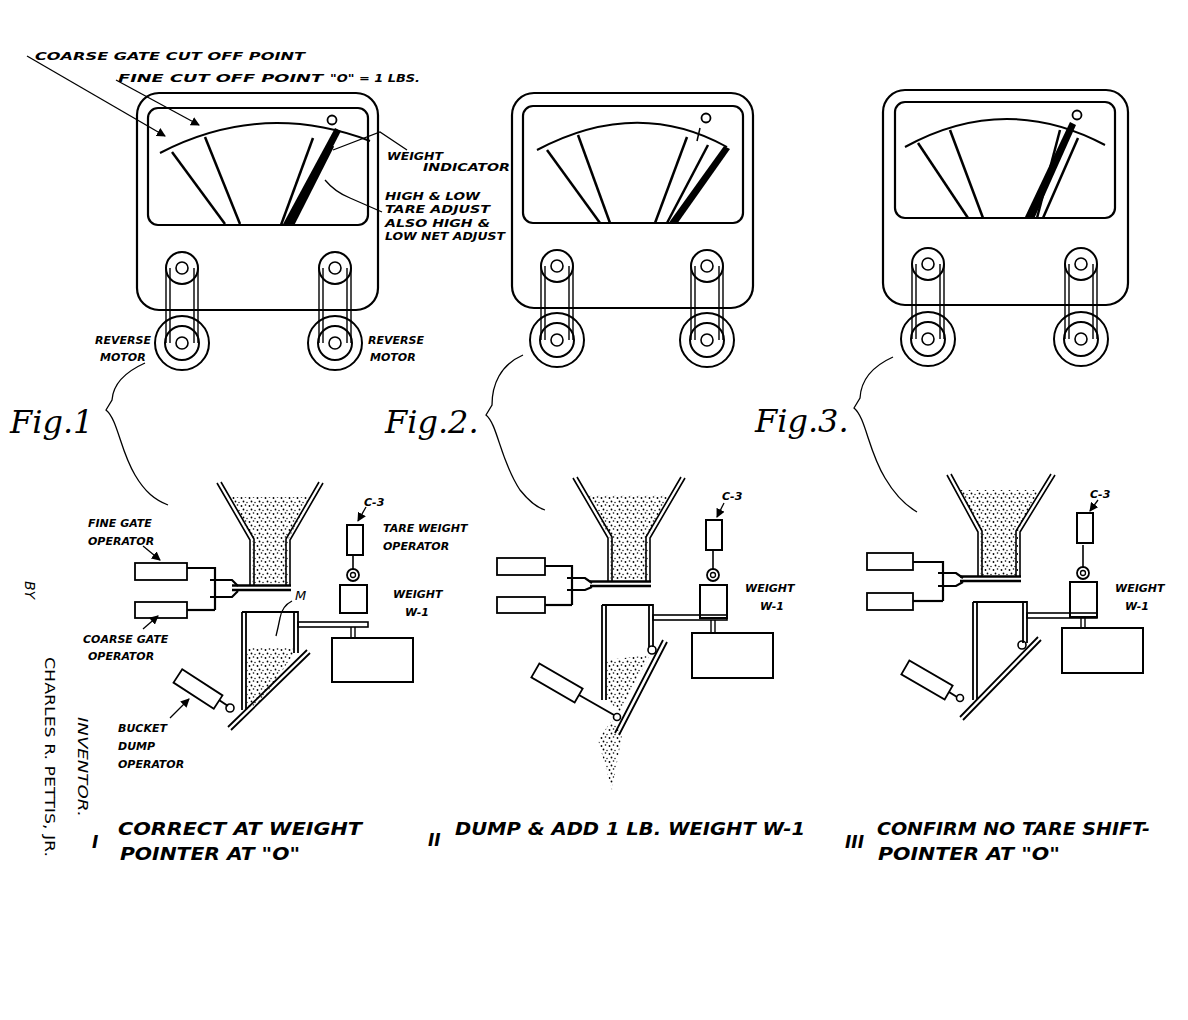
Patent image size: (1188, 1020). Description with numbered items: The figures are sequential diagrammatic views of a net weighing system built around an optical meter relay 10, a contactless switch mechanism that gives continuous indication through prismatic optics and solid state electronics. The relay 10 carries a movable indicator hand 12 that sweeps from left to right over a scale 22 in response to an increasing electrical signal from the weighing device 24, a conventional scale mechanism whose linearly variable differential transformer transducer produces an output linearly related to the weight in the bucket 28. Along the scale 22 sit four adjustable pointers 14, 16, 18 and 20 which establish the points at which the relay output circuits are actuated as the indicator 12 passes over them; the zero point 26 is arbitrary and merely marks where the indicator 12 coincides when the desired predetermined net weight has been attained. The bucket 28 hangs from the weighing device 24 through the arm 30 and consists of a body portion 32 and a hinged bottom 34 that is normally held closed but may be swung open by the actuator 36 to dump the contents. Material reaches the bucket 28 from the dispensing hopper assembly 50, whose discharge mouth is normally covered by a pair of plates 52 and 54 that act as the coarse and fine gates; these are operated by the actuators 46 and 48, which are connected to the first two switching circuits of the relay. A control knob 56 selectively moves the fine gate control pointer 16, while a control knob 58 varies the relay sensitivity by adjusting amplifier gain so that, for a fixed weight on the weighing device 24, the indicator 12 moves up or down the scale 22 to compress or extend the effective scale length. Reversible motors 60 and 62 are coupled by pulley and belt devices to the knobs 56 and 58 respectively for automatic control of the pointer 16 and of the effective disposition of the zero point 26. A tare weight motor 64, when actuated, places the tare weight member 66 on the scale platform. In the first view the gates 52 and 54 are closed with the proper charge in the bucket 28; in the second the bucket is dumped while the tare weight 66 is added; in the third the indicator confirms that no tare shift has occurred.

In FIG. 1, the optical meter relay 10 is at (132, 264).
In FIG. 2, the optical meter relay 10 is at (632, 200).
In FIG. 3, the optical meter relay 10 is at (1005, 197).
In FIG. 1, the indicator hand 12 is at (345, 140).
In FIG. 2, the indicator hand 12 is at (699, 185).
In FIG. 3, the indicator hand 12 is at (1067, 160).
In FIG. 1, the pointer 14 is at (192, 182).
In FIG. 2, the pointer 14 is at (573, 186).
In FIG. 3, the pointer 14 is at (943, 180).
In FIG. 1, the fine gate control pointer 16 is at (223, 181).
In FIG. 2, the fine gate control pointer 16 is at (594, 179).
In FIG. 3, the fine gate control pointer 16 is at (966, 174).
In FIG. 1, the pointer 18 is at (294, 186).
In FIG. 2, the pointer 18 is at (671, 180).
In FIG. 3, the pointer 18 is at (1053, 148).
In FIG. 1, the pointer 20 is at (302, 196).
In FIG. 2, the pointer 20 is at (687, 184).
In FIG. 3, the pointer 20 is at (1063, 175).
In FIG. 1, the scale 22 is at (262, 122).
In FIG. 2, the scale 22 is at (632, 136).
In FIG. 3, the scale 22 is at (1005, 133).
In FIG. 1, the weighing device 24 is at (396, 688).
In FIG. 2, the weighing device 24 is at (732, 655).
In FIG. 3, the weighing device 24 is at (1102, 650).
In FIG. 1, the zero point 26 is at (338, 116).
In FIG. 2, the zero point 26 is at (704, 128).
In FIG. 3, the zero point 26 is at (1077, 115).
In FIG. 1, the bucket 28 is at (298, 672).
In FIG. 2, the bucket 28 is at (652, 679).
In FIG. 3, the bucket 28 is at (1019, 667).
In FIG. 1, the arm 30 is at (320, 622).
In FIG. 2, the arm 30 is at (690, 624).
In FIG. 3, the arm 30 is at (1062, 620).
In FIG. 1, the body portion 32 is at (242, 641).
In FIG. 2, the body portion 32 is at (625, 697).
In FIG. 3, the body portion 32 is at (1000, 651).
In FIG. 1, the hinged bottom 34 is at (255, 702).
In FIG. 2, the hinged bottom 34 is at (600, 708).
In FIG. 3, the hinged bottom 34 is at (956, 697).
In FIG. 1, the actuator 36 is at (205, 692).
In FIG. 2, the actuator 36 is at (568, 686).
In FIG. 3, the actuator 36 is at (926, 680).
In FIG. 1, the actuator 46 is at (135, 610).
In FIG. 2, the actuator 46 is at (534, 605).
In FIG. 3, the actuator 46 is at (905, 601).
In FIG. 1, the actuator 48 is at (178, 563).
In FIG. 2, the actuator 48 is at (544, 581).
In FIG. 3, the actuator 48 is at (915, 577).
In FIG. 1, the dispensing hopper assembly 50 is at (330, 487).
In FIG. 2, the dispensing hopper assembly 50 is at (629, 529).
In FIG. 3, the dispensing hopper assembly 50 is at (1001, 525).
In FIG. 1, the coarse gate plate 52 is at (290, 585).
In FIG. 1, the fine gate plate 54 is at (272, 594).
In FIG. 1, the control knob 56 is at (197, 265).
In FIG. 2, the control knob 56 is at (557, 266).
In FIG. 3, the control knob 56 is at (928, 264).
In FIG. 1, the control knob 58 is at (319, 265).
In FIG. 2, the control knob 58 is at (707, 266).
In FIG. 3, the control knob 58 is at (1081, 264).
In FIG. 1, the reversible motor 60 is at (205, 365).
In FIG. 2, the reversible motor 60 is at (557, 316).
In FIG. 3, the reversible motor 60 is at (928, 315).
In FIG. 1, the reversible motor 62 is at (344, 367).
In FIG. 2, the reversible motor 62 is at (707, 316).
In FIG. 3, the reversible motor 62 is at (1081, 315).
In FIG. 1, the tare weight motor 64 is at (365, 528).
In FIG. 2, the tare weight motor 64 is at (722, 534).
In FIG. 3, the tare weight motor 64 is at (1085, 528).
In FIG. 1, the tare weight member 66 is at (366, 600).
In FIG. 2, the tare weight member 66 is at (727, 590).
In FIG. 3, the tare weight member 66 is at (1092, 590).